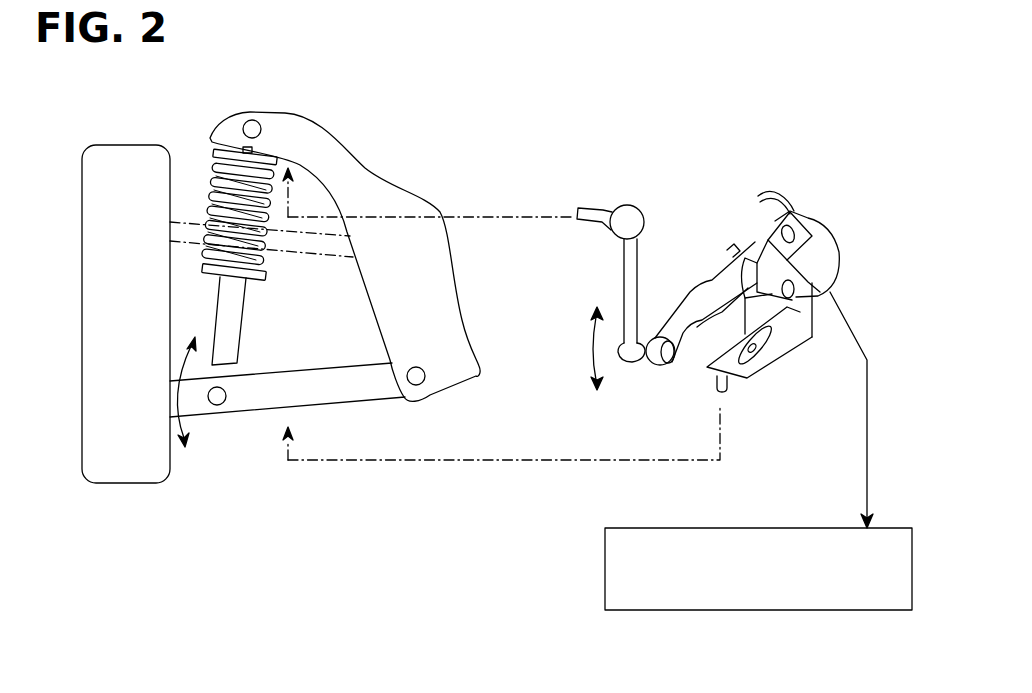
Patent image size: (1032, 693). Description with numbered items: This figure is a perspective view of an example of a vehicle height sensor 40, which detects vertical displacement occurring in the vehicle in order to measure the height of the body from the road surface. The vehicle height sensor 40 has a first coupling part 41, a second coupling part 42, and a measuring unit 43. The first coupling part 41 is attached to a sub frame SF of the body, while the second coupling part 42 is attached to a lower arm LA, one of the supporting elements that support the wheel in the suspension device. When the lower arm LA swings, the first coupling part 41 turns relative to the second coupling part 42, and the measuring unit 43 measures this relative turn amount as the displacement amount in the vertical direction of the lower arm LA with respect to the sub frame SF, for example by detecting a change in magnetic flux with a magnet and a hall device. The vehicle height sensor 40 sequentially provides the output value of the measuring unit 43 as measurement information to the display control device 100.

The sub frame SF is at (295, 133).
The lower arm LA is at (246, 420).
The vehicle height sensor 40 is at (801, 190).
The first coupling part 41 is at (641, 205).
The second coupling part 42 is at (758, 375).
The measuring unit 43 is at (828, 266).
The display control device 100 is at (847, 612).